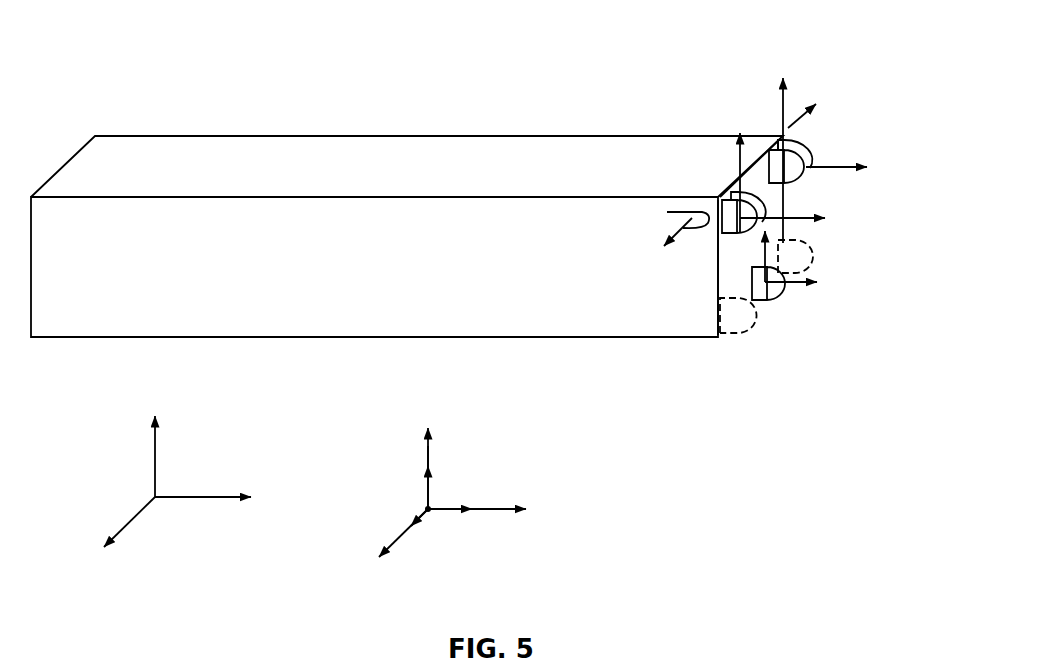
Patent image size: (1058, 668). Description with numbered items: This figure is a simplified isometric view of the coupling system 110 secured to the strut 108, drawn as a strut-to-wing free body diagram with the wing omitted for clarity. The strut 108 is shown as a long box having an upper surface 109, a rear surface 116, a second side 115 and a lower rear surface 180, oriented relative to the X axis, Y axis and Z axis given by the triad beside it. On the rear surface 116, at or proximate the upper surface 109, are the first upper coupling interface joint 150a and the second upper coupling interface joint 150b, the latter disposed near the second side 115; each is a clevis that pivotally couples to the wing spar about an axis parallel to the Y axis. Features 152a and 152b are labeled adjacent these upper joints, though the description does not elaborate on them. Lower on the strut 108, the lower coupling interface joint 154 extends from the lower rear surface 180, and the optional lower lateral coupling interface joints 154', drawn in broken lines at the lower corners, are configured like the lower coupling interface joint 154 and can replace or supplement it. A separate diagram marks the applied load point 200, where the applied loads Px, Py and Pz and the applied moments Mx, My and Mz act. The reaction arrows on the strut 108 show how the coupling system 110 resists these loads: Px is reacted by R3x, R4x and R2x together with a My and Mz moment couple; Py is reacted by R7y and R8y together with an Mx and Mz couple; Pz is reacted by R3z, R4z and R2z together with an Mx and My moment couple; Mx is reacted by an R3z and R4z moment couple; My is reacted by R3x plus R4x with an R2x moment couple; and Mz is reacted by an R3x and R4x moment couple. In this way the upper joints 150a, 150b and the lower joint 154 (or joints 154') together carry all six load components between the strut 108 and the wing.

The strut 108 is at (312, 156).
The upper surface of the strut 109 is at (600, 147).
The coupling system 110 is at (849, 77).
The second side of the strut 115 is at (622, 326).
The rear surface of the strut 116 is at (768, 200).
The first upper coupling interface joint 150a is at (816, 131).
The second upper coupling interface joint 150b is at (735, 236).
The first locating recess 152a is at (767, 135).
The second locating recess 152b is at (666, 220).
The lower coupling interface joint 154 is at (810, 304).
The lower lateral coupling interface joints 154' is at (801, 311).
The lower rear surface of the strut 180 is at (677, 340).
The applied load point 200 is at (433, 495).
The reaction R2x is at (788, 286).
The reaction R2z is at (760, 255).
The reaction R3x is at (830, 216).
The reaction R3z is at (738, 158).
The reaction R4x is at (832, 162).
The reaction R4z is at (788, 100).
The reaction R7y is at (662, 243).
The reaction R8y is at (800, 112).
The applied load Px is at (460, 512).
The applied load Py is at (418, 514).
The applied load Pz is at (430, 485).
The applied moment Mx is at (517, 513).
The applied moment My is at (385, 548).
The applied moment Mz is at (432, 437).
The X-axis X is at (214, 499).
The Y-axis Y is at (115, 534).
The Z-axis Z is at (156, 442).